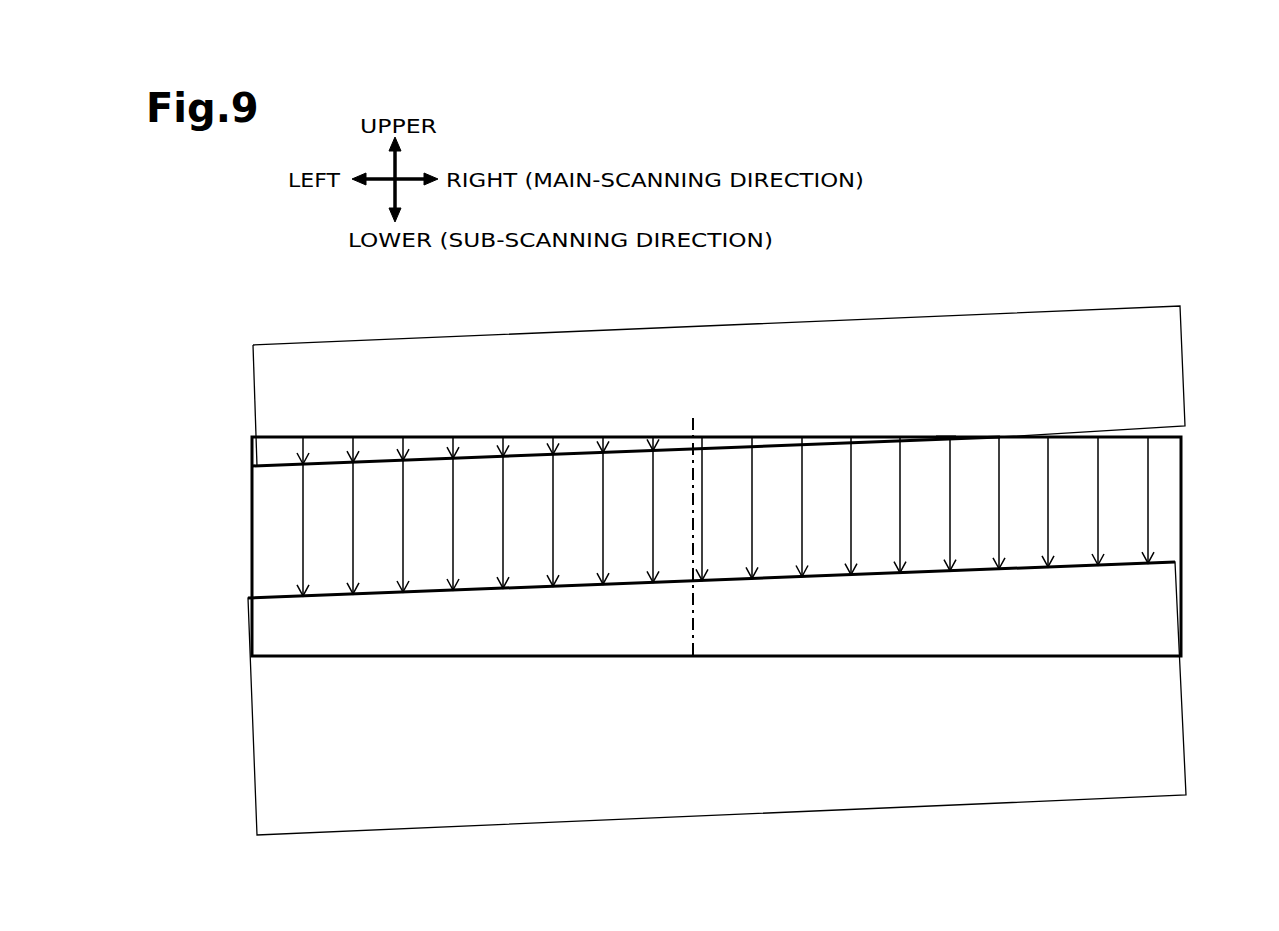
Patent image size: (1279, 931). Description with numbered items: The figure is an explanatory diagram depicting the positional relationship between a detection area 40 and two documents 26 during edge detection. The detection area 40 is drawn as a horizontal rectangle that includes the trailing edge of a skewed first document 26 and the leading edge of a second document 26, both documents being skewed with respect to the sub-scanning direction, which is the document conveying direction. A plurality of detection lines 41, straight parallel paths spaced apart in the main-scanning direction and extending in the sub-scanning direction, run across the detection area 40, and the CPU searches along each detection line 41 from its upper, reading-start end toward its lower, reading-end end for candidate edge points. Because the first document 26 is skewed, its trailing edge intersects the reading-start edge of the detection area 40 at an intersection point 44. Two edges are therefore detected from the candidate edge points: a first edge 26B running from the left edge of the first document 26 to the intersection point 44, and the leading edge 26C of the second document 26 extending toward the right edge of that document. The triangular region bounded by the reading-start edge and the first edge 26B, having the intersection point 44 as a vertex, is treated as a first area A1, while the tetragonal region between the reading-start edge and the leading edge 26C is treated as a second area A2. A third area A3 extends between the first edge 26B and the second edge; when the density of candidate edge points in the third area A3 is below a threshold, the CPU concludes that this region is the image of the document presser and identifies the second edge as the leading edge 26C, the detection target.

The document 26 is at (1157, 380).
The first edge 26B is at (428, 469).
The leading edge 26C is at (1170, 562).
The detection area 40 is at (1182, 464).
The detection lines 41 is at (552, 542).
The intersection point 44 is at (946, 437).
The first area A1 is at (375, 455).
The second area A2 is at (1024, 548).
The third area A3 is at (773, 548).